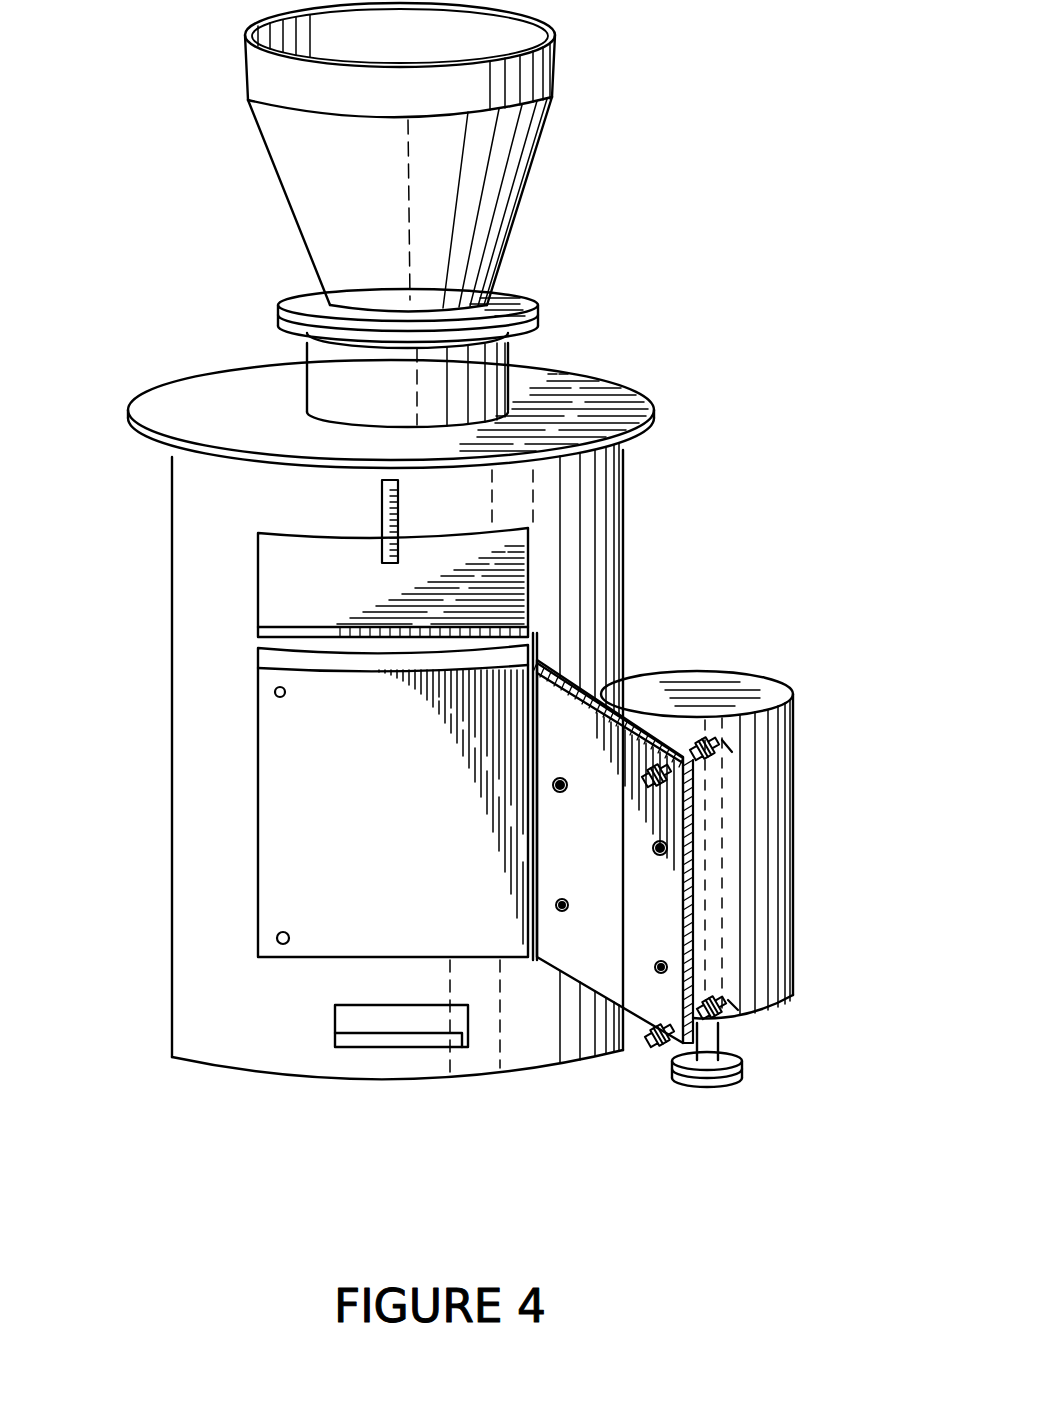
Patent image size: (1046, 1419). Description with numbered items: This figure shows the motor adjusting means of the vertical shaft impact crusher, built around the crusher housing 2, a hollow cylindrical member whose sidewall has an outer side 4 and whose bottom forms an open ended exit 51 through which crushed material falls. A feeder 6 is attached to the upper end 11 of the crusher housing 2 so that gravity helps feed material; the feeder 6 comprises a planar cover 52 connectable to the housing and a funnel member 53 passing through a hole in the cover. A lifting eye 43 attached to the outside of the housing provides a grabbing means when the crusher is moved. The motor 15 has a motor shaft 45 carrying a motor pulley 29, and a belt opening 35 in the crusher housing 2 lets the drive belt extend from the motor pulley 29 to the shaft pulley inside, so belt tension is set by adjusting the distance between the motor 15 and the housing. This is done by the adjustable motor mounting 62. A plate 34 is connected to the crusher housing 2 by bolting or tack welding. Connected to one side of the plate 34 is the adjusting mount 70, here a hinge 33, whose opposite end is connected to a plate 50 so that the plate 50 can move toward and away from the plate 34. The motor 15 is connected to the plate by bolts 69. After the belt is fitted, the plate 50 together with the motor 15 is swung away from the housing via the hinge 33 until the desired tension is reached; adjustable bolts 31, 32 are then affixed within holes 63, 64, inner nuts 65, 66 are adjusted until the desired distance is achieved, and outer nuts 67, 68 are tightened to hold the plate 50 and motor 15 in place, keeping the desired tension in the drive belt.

The crusher housing 2 is at (465, 831).
The outer side 4 is at (220, 538).
The feeder 6 is at (545, 265).
The upper end 11 is at (512, 213).
The motor 15 is at (733, 870).
The motor pulley 29 is at (723, 1087).
The adjustable bolt 31 is at (725, 745).
The adjustable bolt 32 is at (735, 1005).
The hinge 33 is at (530, 705).
The plate 34 is at (372, 822).
The belt opening 35 is at (421, 1039).
The lifting eye 43 is at (382, 530).
The motor shaft 45 is at (720, 1040).
The plate 50 is at (590, 762).
The open ended exit 51 is at (372, 1095).
The planar cover 52 is at (622, 418).
The funnel member 53 is at (580, 58).
The adjustable motor mounting 62 is at (520, 982).
The hole 63 is at (285, 690).
The hole 64 is at (289, 934).
The inner nut 65 is at (655, 766).
The inner nut 66 is at (657, 1028).
The outer nut 67 is at (703, 740).
The outer nut 68 is at (712, 998).
The bolts 69 is at (562, 792).
The adjusting mount 70 is at (433, 796).